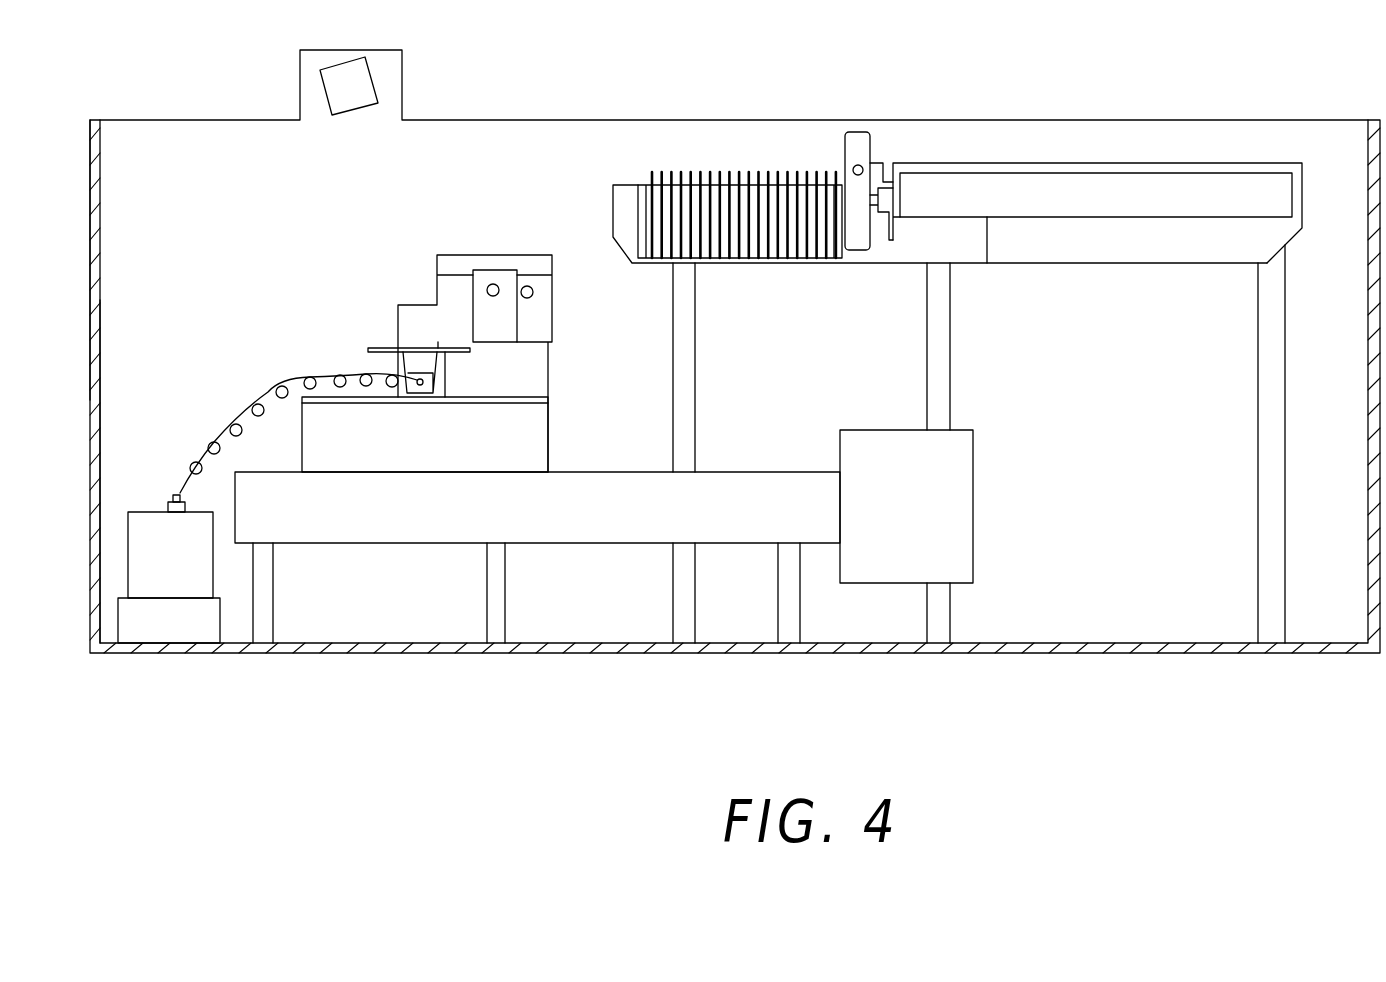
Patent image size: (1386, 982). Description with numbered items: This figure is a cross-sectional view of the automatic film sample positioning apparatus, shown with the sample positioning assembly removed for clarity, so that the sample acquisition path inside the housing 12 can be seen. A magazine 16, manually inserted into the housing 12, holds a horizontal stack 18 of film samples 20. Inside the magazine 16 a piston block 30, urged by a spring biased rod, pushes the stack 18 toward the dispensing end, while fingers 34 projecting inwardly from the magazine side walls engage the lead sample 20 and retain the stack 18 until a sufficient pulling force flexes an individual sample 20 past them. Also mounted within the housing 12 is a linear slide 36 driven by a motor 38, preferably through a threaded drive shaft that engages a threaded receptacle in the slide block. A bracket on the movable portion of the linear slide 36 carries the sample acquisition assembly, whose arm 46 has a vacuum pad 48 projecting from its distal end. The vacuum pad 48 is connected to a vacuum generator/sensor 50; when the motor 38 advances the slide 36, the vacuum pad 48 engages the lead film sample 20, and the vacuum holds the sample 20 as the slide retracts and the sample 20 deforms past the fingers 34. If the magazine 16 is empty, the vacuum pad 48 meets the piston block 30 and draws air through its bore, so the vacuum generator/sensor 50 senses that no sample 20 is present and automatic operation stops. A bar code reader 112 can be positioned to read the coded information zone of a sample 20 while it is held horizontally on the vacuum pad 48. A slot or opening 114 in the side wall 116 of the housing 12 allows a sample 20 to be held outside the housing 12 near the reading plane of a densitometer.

The housing 12 is at (480, 650).
The magazine 16 is at (1148, 247).
The horizontal stack 18 is at (748, 220).
The film sample 20 is at (652, 173).
The piston block 30 is at (863, 146).
The fingers 34 is at (638, 212).
The linear slide 36 is at (565, 530).
The motor 38 is at (953, 522).
The arm 46 is at (497, 330).
The vacuum pad 48 is at (400, 363).
The vacuum generator/sensor 50 is at (187, 565).
The bar code reader 112 is at (337, 80).
The slot or opening 114 is at (100, 337).
The side wall 116 is at (100, 178).